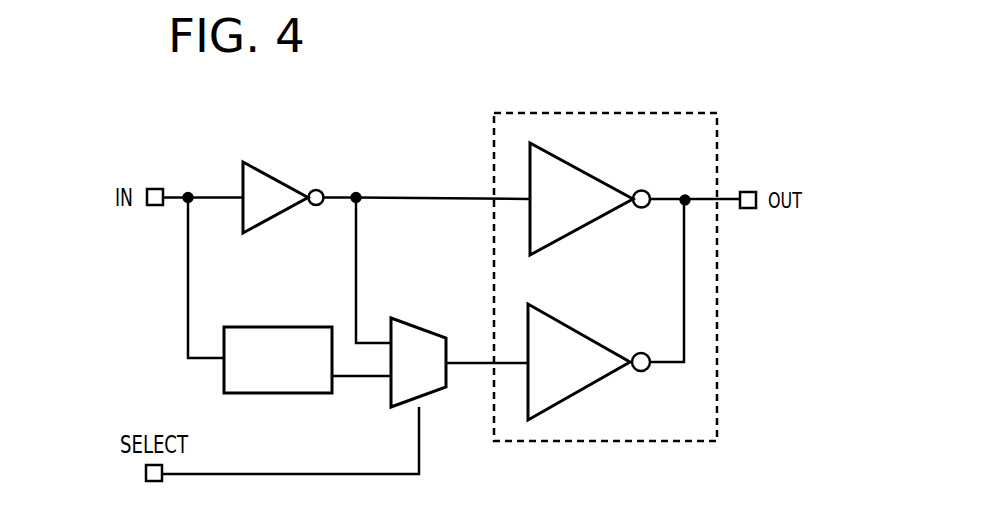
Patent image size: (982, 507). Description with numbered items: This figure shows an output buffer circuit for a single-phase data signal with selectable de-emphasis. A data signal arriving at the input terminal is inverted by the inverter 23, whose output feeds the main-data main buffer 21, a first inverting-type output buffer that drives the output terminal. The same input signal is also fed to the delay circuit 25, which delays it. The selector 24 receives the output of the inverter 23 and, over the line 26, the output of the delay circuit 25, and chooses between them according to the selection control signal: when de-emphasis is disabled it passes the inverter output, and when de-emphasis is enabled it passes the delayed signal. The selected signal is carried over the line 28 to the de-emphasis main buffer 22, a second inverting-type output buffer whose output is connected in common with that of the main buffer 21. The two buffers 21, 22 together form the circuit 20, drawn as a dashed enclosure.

The circuit 20 is at (718, 113).
The main-data main buffer 21 is at (560, 156).
The de-emphasis main buffer 22 is at (558, 318).
The inverter 23 is at (252, 162).
The selector 24 is at (413, 322).
The delay circuit 25 is at (268, 327).
The delayed signal line 26 is at (366, 382).
The selector output line 28 is at (475, 368).